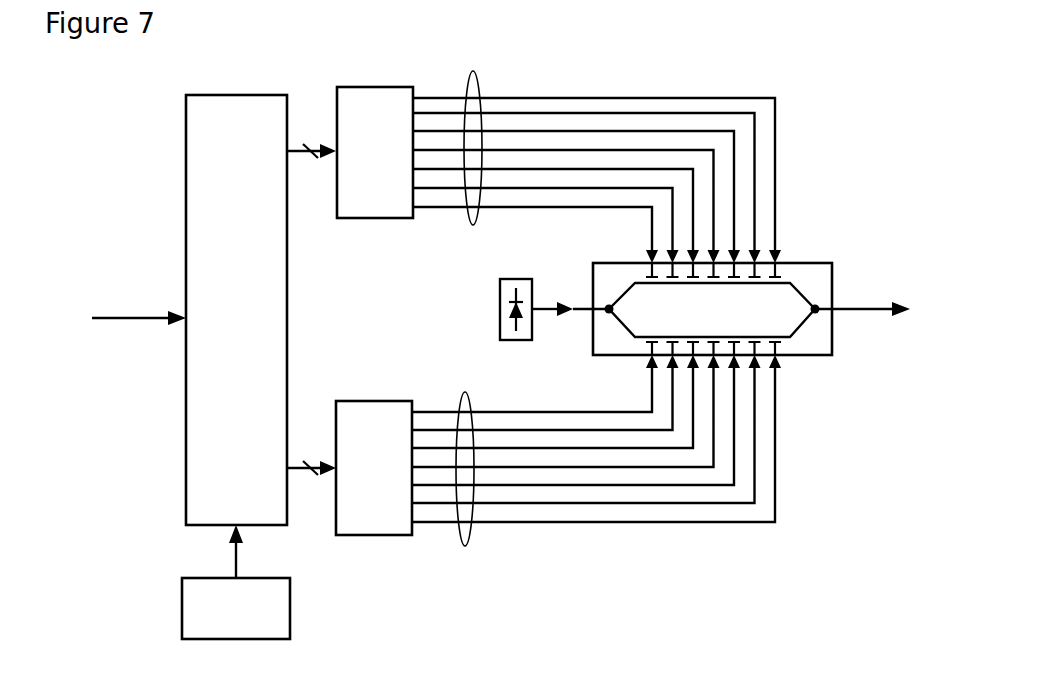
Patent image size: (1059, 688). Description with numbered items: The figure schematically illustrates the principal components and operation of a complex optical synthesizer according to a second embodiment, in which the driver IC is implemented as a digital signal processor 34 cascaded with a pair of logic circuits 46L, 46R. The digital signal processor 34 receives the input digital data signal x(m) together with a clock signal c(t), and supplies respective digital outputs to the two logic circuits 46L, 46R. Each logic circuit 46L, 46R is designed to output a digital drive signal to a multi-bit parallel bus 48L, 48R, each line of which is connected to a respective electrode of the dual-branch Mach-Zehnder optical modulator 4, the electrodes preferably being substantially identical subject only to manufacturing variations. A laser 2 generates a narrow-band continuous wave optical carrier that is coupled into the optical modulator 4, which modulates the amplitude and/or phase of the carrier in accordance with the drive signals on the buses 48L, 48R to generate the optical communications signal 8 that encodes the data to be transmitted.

The digital signal processor 34 is at (254, 316).
The logic circuit 46L is at (391, 198).
The logic circuit 46R is at (392, 512).
The multi-bit parallel bus 48L is at (473, 71).
The multi-bit parallel bus 48R is at (465, 546).
The laser 2 is at (512, 279).
The optical modulator 4 is at (810, 263).
The optical communications signal 8 is at (848, 309).